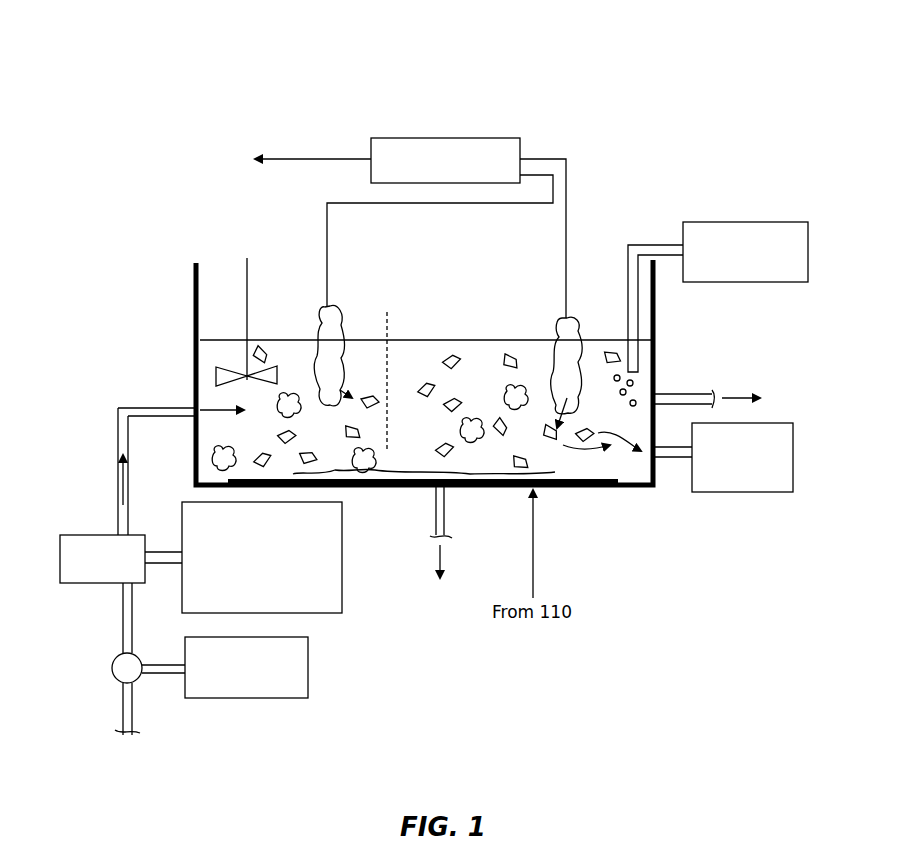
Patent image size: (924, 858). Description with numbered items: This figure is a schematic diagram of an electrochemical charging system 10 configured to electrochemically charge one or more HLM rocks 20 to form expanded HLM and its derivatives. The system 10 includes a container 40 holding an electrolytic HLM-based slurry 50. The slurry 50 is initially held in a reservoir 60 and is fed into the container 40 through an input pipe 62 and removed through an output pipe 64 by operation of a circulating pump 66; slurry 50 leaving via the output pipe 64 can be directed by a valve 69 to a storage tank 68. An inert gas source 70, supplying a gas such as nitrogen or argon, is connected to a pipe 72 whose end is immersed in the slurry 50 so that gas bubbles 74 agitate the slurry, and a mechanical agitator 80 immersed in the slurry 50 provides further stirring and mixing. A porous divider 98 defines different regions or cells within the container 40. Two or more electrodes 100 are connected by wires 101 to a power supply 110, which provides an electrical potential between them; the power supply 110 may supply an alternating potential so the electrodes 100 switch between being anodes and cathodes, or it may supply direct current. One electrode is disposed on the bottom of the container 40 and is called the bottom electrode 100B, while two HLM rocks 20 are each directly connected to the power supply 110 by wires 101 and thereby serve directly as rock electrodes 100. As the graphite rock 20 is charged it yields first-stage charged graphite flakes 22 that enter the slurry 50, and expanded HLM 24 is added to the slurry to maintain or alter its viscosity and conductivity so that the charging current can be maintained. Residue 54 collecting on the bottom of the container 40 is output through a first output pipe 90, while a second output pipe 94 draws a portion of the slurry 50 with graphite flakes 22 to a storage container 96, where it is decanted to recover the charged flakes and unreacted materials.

The electrochemical charging system 10 is at (172, 42).
The HLM rock 20 is at (448, 366).
The graphite flakes 22 is at (505, 358).
The expanded HLM 24 is at (283, 410).
The container 40 is at (193, 276).
The slurry 50 is at (196, 410).
The residue 54 is at (446, 550).
The reservoir 60 is at (343, 555).
The input pipe 62 is at (118, 408).
The output pipe 64 is at (682, 392).
The circulating pump 66 is at (80, 535).
The storage tank 68 is at (309, 667).
The valve 69 is at (114, 660).
The inert gas source 70 is at (745, 221).
The pipe 72 is at (647, 243).
The gas bubbles 74 is at (635, 383).
The mechanical agitator 80 is at (245, 270).
The first output pipe 90 is at (447, 507).
The second output pipe 94 is at (662, 460).
The storage container 96 is at (745, 493).
The porous divider 98 is at (388, 322).
The electrodes 100 is at (550, 305).
The bottom electrode 100B is at (604, 478).
The wire 101 is at (302, 155).
The power supply 110 is at (397, 136).